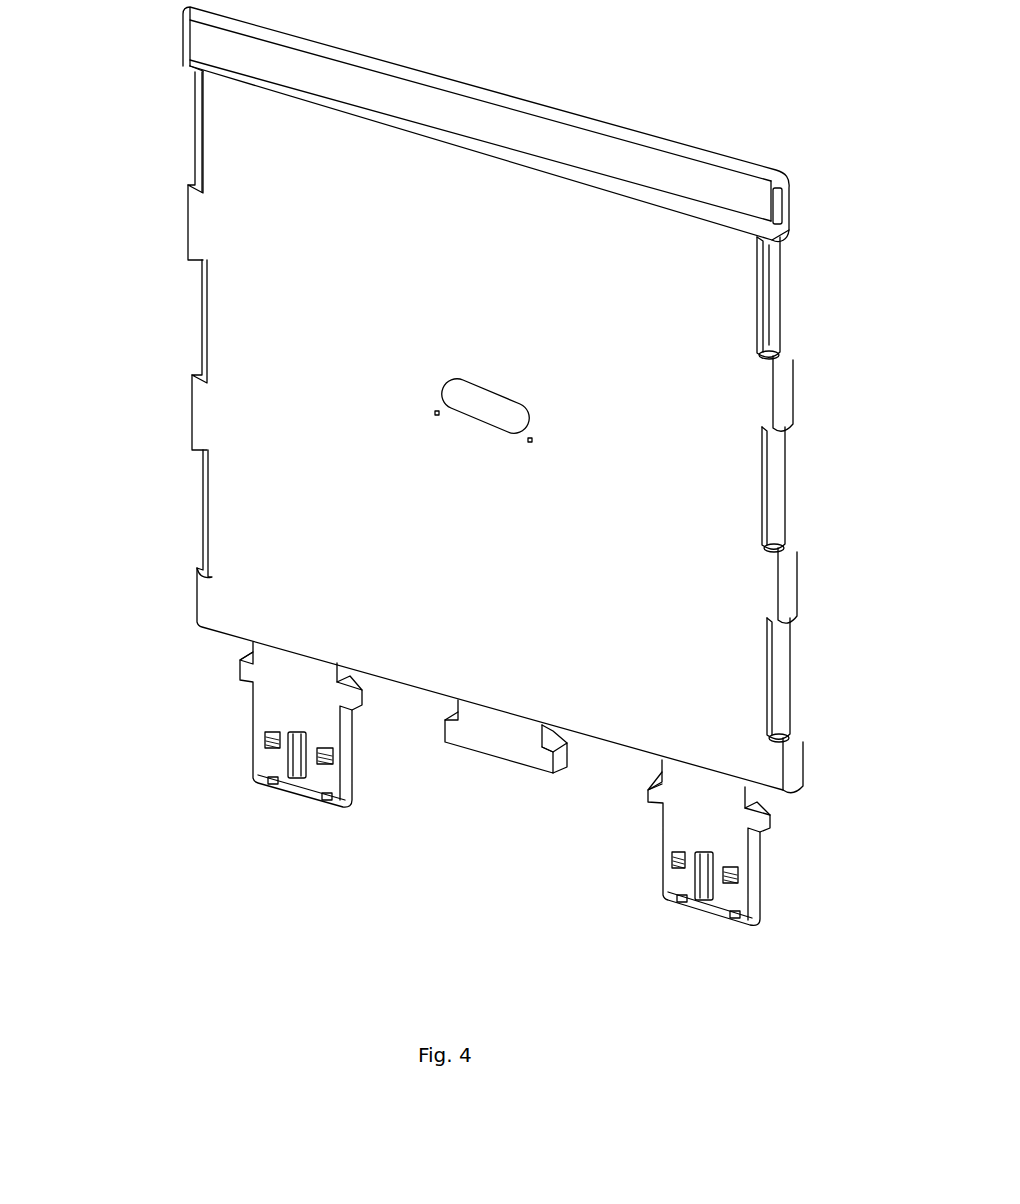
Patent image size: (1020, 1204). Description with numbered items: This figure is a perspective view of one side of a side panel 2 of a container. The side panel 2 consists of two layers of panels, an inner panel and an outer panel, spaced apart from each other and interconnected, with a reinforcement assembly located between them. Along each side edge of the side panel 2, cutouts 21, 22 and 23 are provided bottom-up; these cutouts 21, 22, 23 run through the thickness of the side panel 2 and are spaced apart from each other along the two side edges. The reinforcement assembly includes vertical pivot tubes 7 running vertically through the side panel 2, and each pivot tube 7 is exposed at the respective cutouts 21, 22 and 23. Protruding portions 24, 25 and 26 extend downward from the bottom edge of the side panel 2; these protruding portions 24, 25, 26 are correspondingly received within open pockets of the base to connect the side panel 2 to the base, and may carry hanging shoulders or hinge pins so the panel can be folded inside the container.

The side panel 2 is at (226, 655).
The vertical pivot tube 7 is at (773, 327).
The cutout 21 is at (195, 522).
The cutout 22 is at (192, 333).
The cutout 23 is at (190, 133).
The protruding portion 24 is at (273, 763).
The protruding portion 25 is at (480, 730).
The protruding portion 26 is at (680, 887).